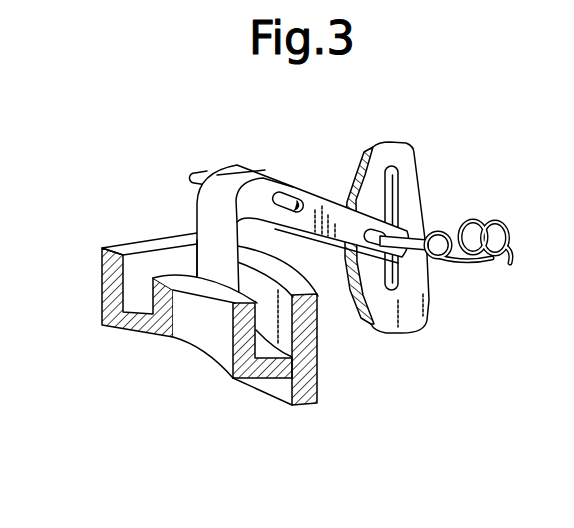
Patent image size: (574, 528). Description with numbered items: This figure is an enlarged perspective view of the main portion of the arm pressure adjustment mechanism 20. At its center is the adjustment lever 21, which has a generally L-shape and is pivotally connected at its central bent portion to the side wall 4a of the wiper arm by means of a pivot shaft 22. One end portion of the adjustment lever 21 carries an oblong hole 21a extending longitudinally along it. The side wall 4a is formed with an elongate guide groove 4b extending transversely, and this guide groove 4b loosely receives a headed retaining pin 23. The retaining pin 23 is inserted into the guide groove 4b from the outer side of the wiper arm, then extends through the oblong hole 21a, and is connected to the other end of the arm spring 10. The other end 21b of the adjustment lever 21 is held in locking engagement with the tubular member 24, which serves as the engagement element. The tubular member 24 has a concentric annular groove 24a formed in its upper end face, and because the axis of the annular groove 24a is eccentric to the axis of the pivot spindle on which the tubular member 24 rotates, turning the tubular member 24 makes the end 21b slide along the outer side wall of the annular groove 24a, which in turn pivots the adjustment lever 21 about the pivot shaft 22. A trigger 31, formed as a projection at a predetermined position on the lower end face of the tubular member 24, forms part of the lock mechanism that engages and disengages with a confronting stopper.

The arm pressure adjustment mechanism 20 is at (128, 179).
The adjustment lever 21 is at (312, 188).
The oblong hole 21a is at (361, 306).
The other end of the adjustment lever 21b is at (197, 245).
The pivot shaft 22 is at (196, 171).
The headed retaining pin 23 is at (439, 232).
The arm spring 10 is at (491, 258).
The side wall 4a is at (408, 155).
The guide groove 4b is at (396, 284).
The tubular member 24 is at (203, 340).
The annular groove 24a is at (287, 327).
The trigger 31 is at (305, 403).